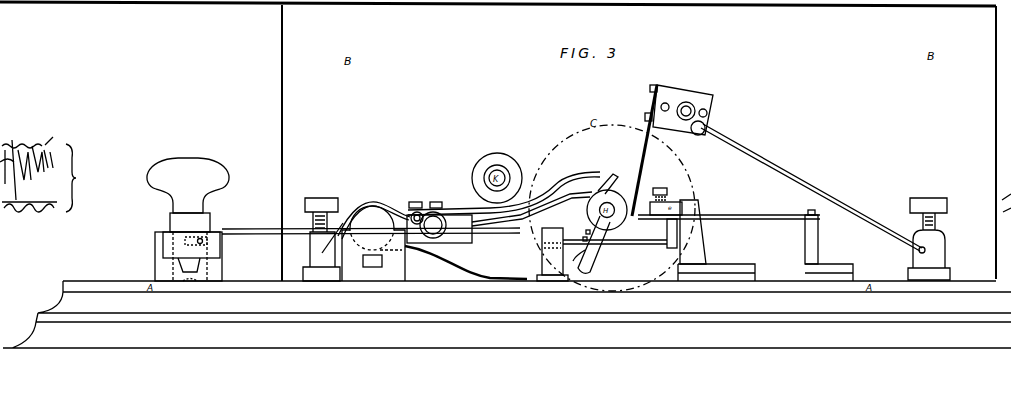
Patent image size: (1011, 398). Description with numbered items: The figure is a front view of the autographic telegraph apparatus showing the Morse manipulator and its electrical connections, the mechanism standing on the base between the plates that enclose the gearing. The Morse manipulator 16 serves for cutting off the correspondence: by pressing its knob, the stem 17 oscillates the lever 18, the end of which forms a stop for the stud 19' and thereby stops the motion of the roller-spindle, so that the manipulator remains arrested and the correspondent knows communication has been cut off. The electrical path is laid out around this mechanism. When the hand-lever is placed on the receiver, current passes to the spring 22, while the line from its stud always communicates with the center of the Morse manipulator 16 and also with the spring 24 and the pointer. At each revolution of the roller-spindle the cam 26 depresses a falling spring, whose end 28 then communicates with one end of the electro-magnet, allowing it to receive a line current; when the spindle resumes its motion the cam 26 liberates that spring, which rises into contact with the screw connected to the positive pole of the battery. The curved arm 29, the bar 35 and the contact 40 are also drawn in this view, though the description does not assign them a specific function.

The Morse manipulator 16 is at (188, 185).
The stem 17 is at (188, 256).
The lever 18 is at (371, 233).
The stud 19' is at (589, 240).
The spring 22 is at (532, 209).
The spring 24 is at (672, 150).
The cam 26 is at (613, 184).
The end of spring 28 is at (602, 254).
The curved arm 29 is at (473, 202).
The bar 35 is at (729, 226).
The contact 40 is at (666, 192).